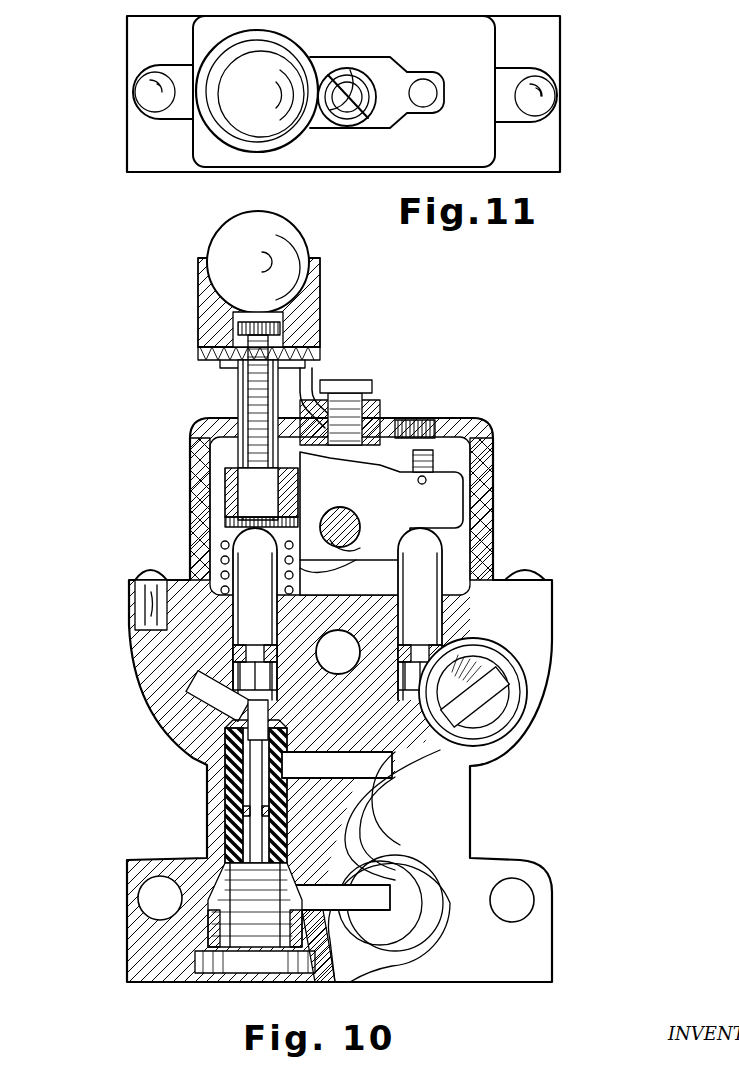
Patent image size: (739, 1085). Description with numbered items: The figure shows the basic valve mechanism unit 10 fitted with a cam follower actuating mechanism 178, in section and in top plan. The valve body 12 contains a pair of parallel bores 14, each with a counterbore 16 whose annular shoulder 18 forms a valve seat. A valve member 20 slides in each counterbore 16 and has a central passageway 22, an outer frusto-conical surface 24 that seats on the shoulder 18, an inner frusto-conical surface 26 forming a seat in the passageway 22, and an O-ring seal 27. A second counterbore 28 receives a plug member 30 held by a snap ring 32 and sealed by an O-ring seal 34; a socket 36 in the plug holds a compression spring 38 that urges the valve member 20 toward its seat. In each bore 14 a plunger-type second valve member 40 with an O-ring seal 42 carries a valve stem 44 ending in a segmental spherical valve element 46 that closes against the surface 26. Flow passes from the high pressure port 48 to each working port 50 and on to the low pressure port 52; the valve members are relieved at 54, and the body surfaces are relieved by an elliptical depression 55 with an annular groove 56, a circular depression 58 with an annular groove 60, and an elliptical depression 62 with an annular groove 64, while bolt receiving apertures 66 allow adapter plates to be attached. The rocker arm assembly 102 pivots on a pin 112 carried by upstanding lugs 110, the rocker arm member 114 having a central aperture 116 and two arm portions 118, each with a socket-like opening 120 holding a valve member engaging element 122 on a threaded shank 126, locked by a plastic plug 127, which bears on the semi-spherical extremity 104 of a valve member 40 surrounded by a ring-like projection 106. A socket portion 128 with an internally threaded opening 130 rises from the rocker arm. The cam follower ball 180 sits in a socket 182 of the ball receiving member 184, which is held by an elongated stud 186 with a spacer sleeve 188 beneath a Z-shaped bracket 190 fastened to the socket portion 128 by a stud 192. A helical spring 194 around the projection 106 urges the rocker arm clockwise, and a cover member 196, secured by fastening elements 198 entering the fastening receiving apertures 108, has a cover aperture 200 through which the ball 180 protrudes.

In FIG. 11, the valve mechanism unit 10 is at (568, 43).
In FIG. 10, the valve mechanism unit 10 is at (585, 608).
In FIG. 11, the valve body 12 is at (540, 157).
In FIG. 10, the valve body 12 is at (535, 652).
In FIG. 10, the bore 14 is at (400, 630).
In FIG. 10, the counterbore 16 is at (234, 812).
In FIG. 10, the annular shoulder 18 is at (215, 735).
In FIG. 10, the valve member 20 is at (230, 790).
In FIG. 10, the central passageway 22 is at (248, 840).
In FIG. 10, the outer frusto-conical surface 24 is at (337, 766).
In FIG. 10, the inner frusto-conical surface 26 is at (258, 741).
In FIG. 10, the O-ring seal 27 is at (285, 814).
In FIG. 10, the second counterbore 28 is at (208, 945).
In FIG. 10, the plug member 30 is at (247, 960).
In FIG. 10, the snap ring 32 is at (203, 975).
In FIG. 10, the O-ring seal 34 is at (318, 955).
In FIG. 10, the socket 36 is at (278, 955).
In FIG. 10, the compression spring 38 is at (284, 905).
In FIG. 10, the second valve member 40 is at (337, 614).
In FIG. 10, the O-ring seal 42 is at (243, 645).
In FIG. 10, the valve stem 44 is at (255, 698).
In FIG. 10, the segmental spherical valve element 46 is at (256, 730).
In FIG. 10, the high pressure port 48 is at (392, 768).
In FIG. 10, the working port 50 is at (180, 695).
In FIG. 10, the low pressure port 52 is at (395, 895).
In FIG. 10, the relieved periphery 54 is at (230, 768).
In FIG. 10, the elliptical depression 55 is at (370, 787).
In FIG. 10, the annular groove 56 is at (397, 815).
In FIG. 10, the circular depression 58 is at (458, 668).
In FIG. 10, the annular groove 60 is at (500, 737).
In FIG. 10, the elliptical depression 62 is at (372, 920).
In FIG. 10, the annular groove 64 is at (392, 953).
In FIG. 10, the bolt receiving aperture 66 is at (140, 898).
In FIG. 10, the rocker arm assembly 102 is at (392, 448).
In FIG. 10, the semi-spherical extremity 104 is at (240, 530).
In FIG. 10, the ring-like projection 106 is at (310, 566).
In FIG. 10, the fastening receiving aperture 108 is at (135, 605).
In FIG. 10, the upstanding lug 110 is at (355, 573).
In FIG. 10, the pin 112 is at (333, 528).
In FIG. 10, the rocker arm member 114 is at (381, 523).
In FIG. 10, the central aperture 116 is at (356, 520).
In FIG. 10, the arm portion 118 is at (235, 480).
In FIG. 10, the socket-like opening 120 is at (286, 494).
In FIG. 10, the valve member engaging element 122 is at (238, 503).
In FIG. 11, the shank 126 is at (425, 92).
In FIG. 10, the shank 126 is at (434, 459).
In FIG. 10, the plastic plug 127 is at (426, 482).
In FIG. 10, the socket portion 128 is at (326, 460).
In FIG. 10, the internally threaded opening 130 is at (322, 420).
In FIG. 10, the cam follower actuating mechanism 178 is at (330, 308).
In FIG. 11, the cam follower ball 180 is at (272, 95).
In FIG. 10, the cam follower ball 180 is at (276, 236).
In FIG. 10, the socket 182 is at (228, 292).
In FIG. 11, the ball receiving member 184 is at (290, 142).
In FIG. 10, the ball receiving member 184 is at (205, 312).
In FIG. 10, the elongated stud 186 is at (245, 383).
In FIG. 10, the spacer sleeve 188 is at (240, 412).
In FIG. 11, the Z-shaped bracket 190 is at (362, 125).
In FIG. 10, the Z-shaped bracket 190 is at (313, 370).
In FIG. 11, the stud 192 is at (362, 72).
In FIG. 10, the stud 192 is at (377, 420).
In FIG. 10, the helical spring 194 is at (222, 545).
In FIG. 11, the cover member 196 is at (400, 160).
In FIG. 10, the cover member 196 is at (480, 470).
In FIG. 11, the fastening element 198 is at (148, 92).
In FIG. 10, the fastening element 198 is at (138, 562).
In FIG. 11, the cover aperture 200 is at (378, 62).
In FIG. 10, the cover aperture 200 is at (432, 420).